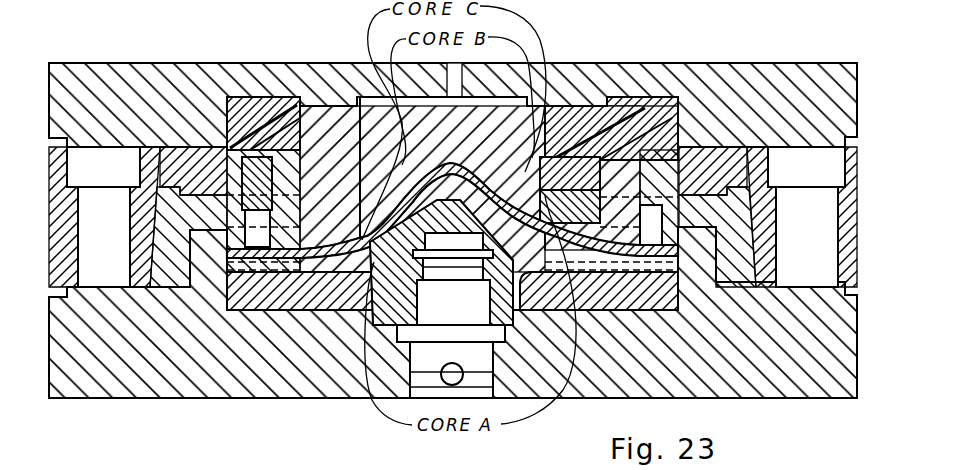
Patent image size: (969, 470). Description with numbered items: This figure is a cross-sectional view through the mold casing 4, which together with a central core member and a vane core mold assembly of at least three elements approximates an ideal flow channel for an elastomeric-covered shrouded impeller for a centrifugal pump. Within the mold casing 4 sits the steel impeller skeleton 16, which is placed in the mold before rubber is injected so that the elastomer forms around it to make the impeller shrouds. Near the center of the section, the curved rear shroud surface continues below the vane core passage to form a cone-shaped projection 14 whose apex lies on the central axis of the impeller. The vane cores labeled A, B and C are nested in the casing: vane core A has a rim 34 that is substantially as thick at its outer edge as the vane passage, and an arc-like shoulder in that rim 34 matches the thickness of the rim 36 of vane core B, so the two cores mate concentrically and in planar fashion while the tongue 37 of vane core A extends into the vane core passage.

The mold casing 4 is at (77, 73).
The cone-shaped projection 14 is at (486, 188).
The steel impeller skeleton 16 is at (252, 147).
The rim 34 is at (168, 240).
The rim 36 is at (175, 148).
The tongue 37 is at (607, 117).